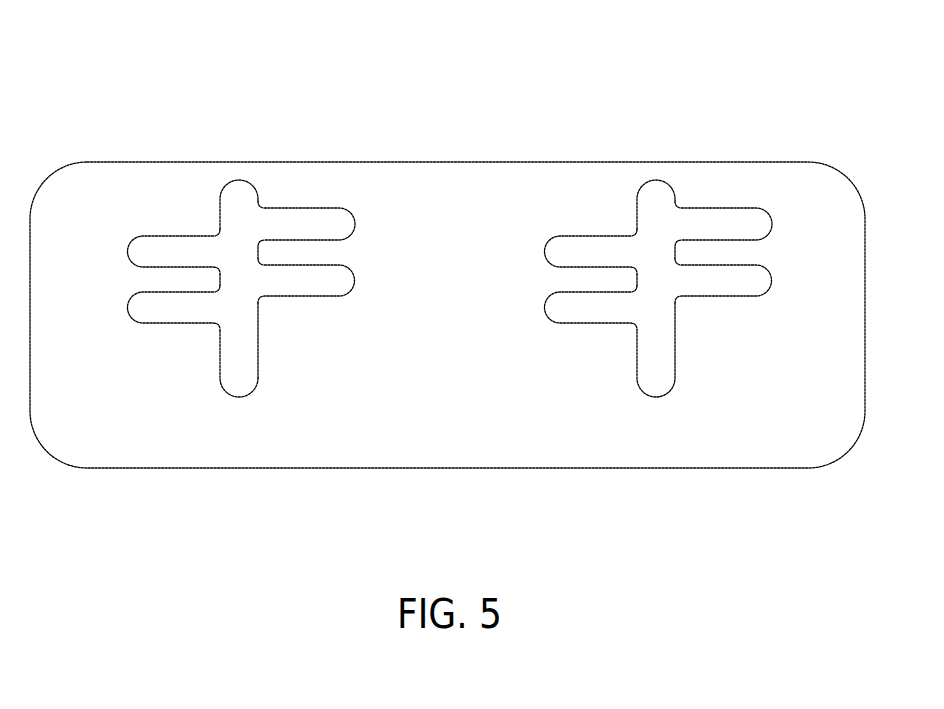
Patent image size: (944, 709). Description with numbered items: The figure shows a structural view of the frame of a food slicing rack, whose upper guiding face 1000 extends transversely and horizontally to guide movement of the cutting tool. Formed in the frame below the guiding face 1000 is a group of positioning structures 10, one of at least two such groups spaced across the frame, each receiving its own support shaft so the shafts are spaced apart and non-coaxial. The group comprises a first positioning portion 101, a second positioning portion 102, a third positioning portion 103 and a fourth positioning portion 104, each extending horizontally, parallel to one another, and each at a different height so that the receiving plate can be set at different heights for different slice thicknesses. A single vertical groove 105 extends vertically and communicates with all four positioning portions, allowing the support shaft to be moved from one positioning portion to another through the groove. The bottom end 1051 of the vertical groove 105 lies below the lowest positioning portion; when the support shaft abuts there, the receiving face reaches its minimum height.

The group of positioning structures 10 is at (367, 90).
The first positioning portion 101 is at (160, 242).
The second positioning portion 102 is at (178, 305).
The third positioning portion 103 is at (297, 213).
The fourth positioning portion 104 is at (325, 278).
The vertical groove 105 is at (240, 198).
The bottom end of the vertical groove 1051 is at (240, 393).
The guiding face 1000 is at (558, 160).